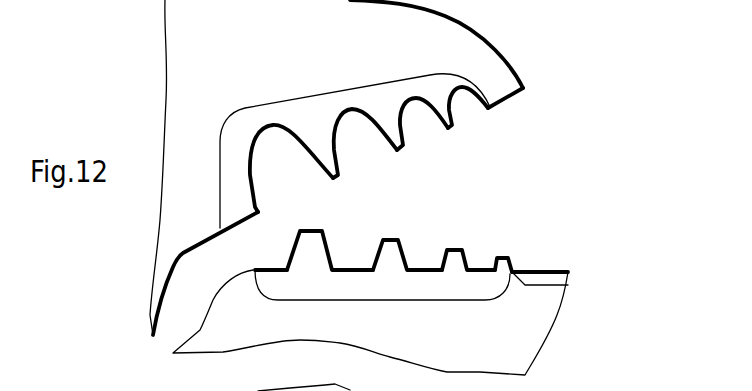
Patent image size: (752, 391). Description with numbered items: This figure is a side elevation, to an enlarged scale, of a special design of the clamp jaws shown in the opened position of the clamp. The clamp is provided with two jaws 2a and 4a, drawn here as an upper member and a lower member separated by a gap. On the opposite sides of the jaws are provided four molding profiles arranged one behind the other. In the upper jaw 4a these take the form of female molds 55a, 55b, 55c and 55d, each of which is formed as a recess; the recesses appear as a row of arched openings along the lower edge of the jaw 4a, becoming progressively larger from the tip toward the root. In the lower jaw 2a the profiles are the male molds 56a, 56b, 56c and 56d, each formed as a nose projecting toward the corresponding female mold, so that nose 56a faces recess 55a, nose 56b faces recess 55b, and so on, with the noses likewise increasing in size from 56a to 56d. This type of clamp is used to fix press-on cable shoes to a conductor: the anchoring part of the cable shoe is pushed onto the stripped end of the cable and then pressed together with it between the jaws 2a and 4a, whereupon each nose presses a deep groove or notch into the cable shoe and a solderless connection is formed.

The jaw 4a is at (497, 80).
The jaw 2a is at (538, 295).
The female mold 55a is at (452, 90).
The female mold 55b is at (405, 100).
The female mold 55c is at (340, 115).
The female mold 55d is at (258, 131).
The male mold 56a is at (503, 263).
The male mold 56b is at (457, 258).
The male mold 56c is at (395, 252).
The male mold 56d is at (315, 247).